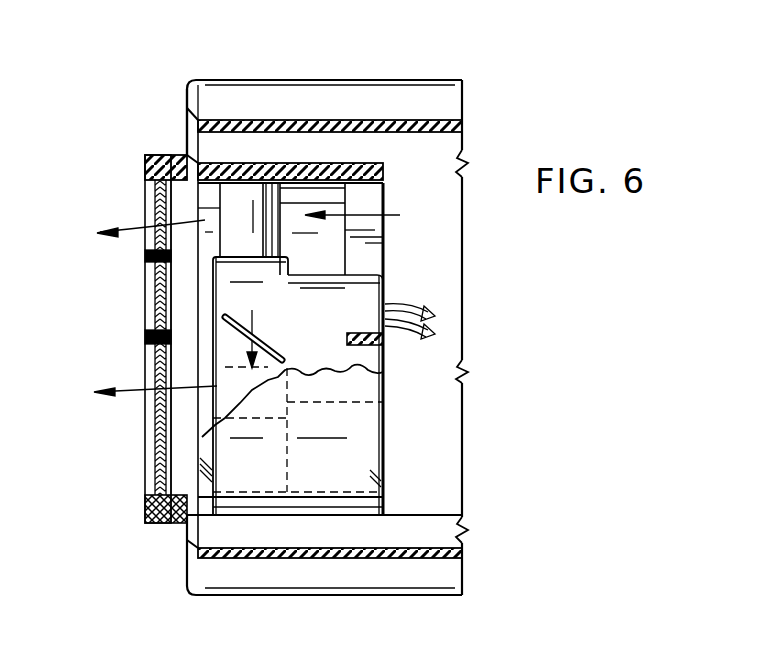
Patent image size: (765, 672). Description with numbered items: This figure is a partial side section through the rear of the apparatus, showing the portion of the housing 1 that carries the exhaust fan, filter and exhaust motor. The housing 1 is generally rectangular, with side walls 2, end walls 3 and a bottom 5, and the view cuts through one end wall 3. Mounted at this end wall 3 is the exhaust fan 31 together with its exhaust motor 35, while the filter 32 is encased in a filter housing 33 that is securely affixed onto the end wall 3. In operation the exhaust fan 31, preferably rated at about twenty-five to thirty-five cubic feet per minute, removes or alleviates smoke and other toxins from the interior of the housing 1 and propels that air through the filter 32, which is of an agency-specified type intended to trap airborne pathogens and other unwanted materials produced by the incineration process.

The housing 1 is at (309, 78).
The side walls 2 is at (395, 120).
The end wall 3 is at (187, 143).
The bottom 5 is at (442, 243).
The exhaust fan 31 is at (329, 158).
The filter 32 is at (155, 450).
The filter housing 33 is at (145, 500).
The exhaust motor 35 is at (375, 297).